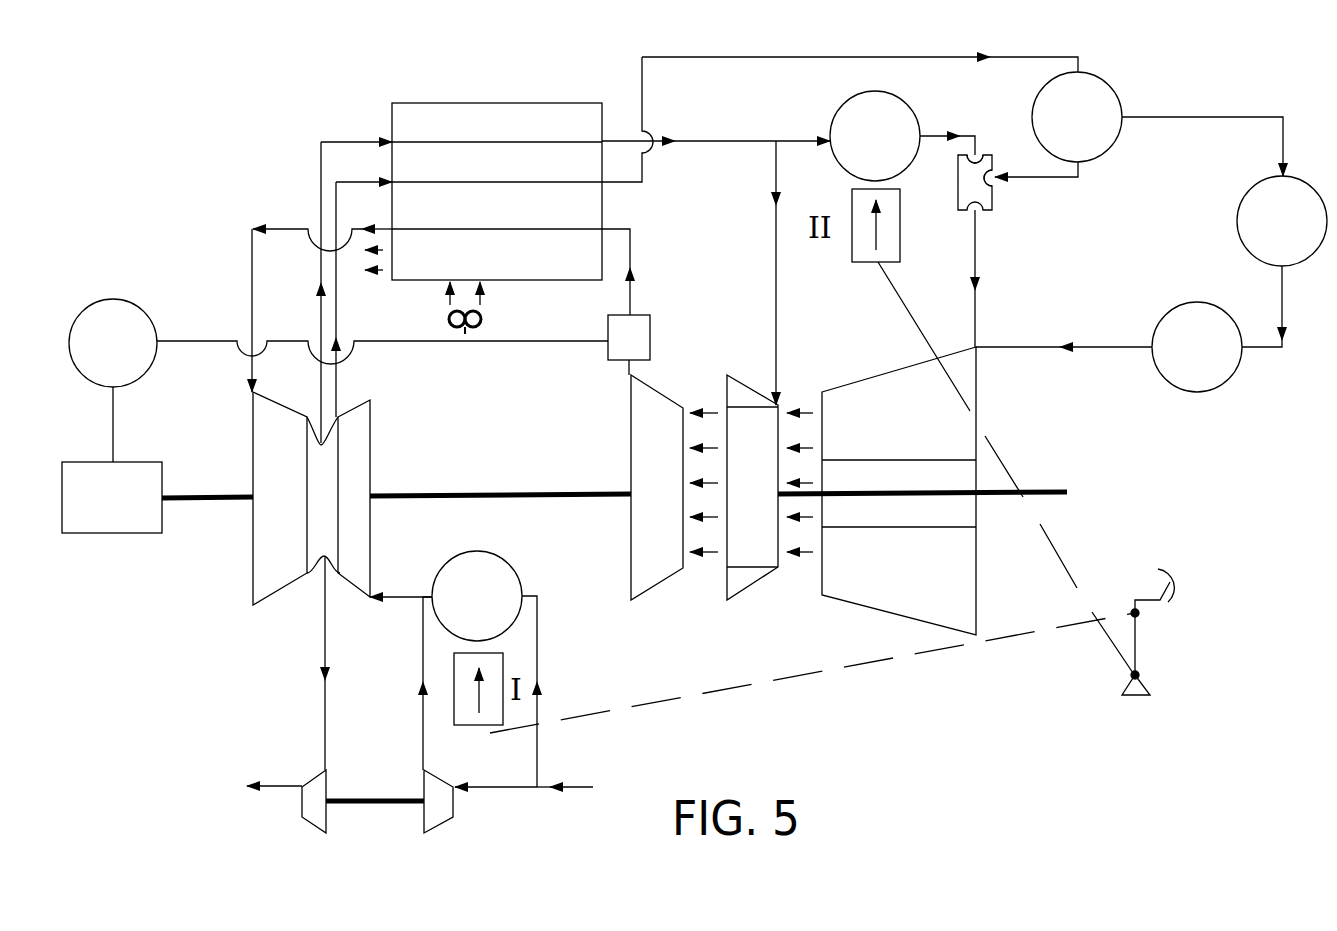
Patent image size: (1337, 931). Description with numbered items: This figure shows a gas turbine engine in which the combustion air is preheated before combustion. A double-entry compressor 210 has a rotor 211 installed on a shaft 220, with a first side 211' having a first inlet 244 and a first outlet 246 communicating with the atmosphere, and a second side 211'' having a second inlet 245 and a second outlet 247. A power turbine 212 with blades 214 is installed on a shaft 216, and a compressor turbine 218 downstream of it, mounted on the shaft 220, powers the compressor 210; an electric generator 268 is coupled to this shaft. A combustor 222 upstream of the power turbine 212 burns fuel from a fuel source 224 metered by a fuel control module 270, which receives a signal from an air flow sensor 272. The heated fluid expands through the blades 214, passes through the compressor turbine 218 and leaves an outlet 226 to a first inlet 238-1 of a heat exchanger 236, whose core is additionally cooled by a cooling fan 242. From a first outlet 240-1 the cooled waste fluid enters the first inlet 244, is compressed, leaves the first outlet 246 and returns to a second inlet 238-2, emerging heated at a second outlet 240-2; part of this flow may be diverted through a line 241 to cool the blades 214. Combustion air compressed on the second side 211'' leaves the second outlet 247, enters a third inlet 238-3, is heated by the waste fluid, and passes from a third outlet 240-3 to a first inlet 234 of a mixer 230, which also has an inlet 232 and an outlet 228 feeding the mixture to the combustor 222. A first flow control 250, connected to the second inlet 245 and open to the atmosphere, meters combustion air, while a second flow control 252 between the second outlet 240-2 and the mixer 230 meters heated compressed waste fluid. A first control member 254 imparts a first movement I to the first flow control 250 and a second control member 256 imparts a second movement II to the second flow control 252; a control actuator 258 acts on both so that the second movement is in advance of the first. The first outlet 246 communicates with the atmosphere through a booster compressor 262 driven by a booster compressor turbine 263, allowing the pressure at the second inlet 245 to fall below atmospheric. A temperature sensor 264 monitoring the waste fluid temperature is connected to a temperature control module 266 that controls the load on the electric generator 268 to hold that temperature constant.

The compressor 210 is at (261, 516).
The rotor 211 is at (314, 520).
The first side of rotor 211' is at (237, 498).
The second side of rotor 211'' is at (399, 498).
The power turbine 212 is at (733, 550).
The blades 214 is at (733, 393).
The shaft 216 is at (1055, 482).
The compressor turbine 218 is at (639, 550).
The shaft 220 is at (200, 505).
The combustor 222 is at (887, 578).
The fuel source 224 is at (1173, 364).
The outlet 226 is at (627, 378).
The outlet 228 is at (978, 214).
The mixer 230 is at (958, 186).
The inlet 232 is at (997, 181).
The first inlet of mixer 234 is at (975, 152).
The heat exchanger 236 is at (520, 100).
The first inlet 238-1 is at (549, 210).
The second inlet 238-2 is at (444, 125).
The third inlet 238-3 is at (444, 164).
The first outlet 240-1 is at (444, 210).
The second outlet 240-2 is at (549, 125).
The third outlet 240-3 is at (549, 164).
The line 241 is at (778, 329).
The cooling fan 242 is at (500, 324).
The first inlet 244 is at (252, 391).
The second inlet 245 is at (373, 597).
The first outlet 246 is at (307, 418).
The second outlet 247 is at (338, 422).
The first flow control 250 is at (453, 613).
The second flow control 252 is at (851, 153).
The first control member 254 is at (466, 727).
The second control member 256 is at (903, 249).
The control actuator 258 is at (1136, 645).
The booster compressor 262 is at (327, 786).
The booster compressor turbine 263 is at (453, 820).
The temperature sensor 264 is at (606, 354).
The temperature control module 266 is at (89, 360).
The electric generator 268 is at (88, 514).
The fuel control module 270 is at (1258, 238).
The air flow sensor 272 is at (1053, 134).